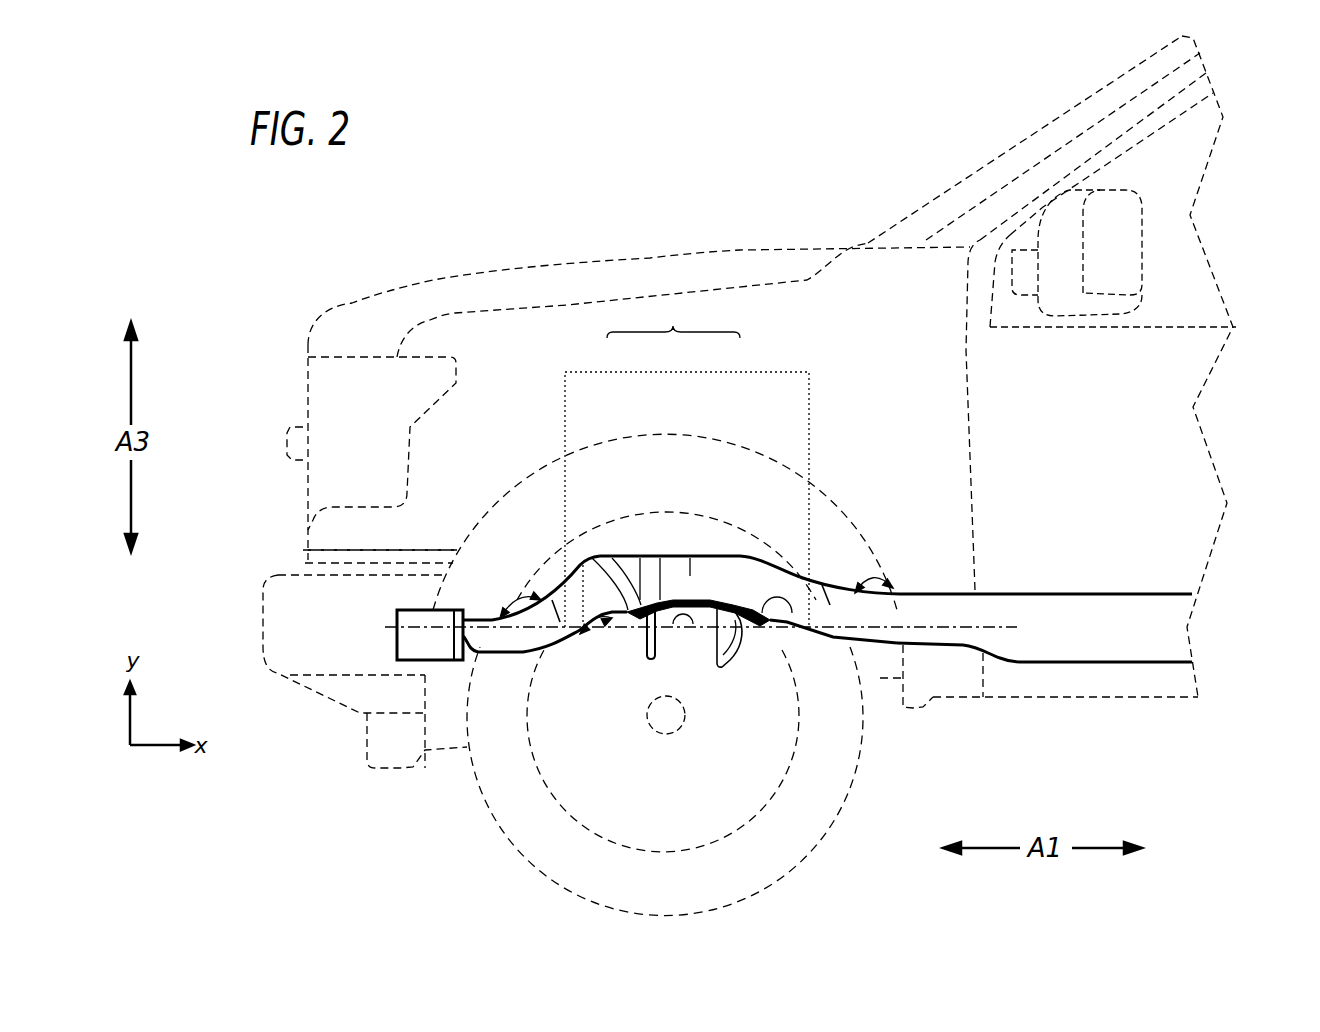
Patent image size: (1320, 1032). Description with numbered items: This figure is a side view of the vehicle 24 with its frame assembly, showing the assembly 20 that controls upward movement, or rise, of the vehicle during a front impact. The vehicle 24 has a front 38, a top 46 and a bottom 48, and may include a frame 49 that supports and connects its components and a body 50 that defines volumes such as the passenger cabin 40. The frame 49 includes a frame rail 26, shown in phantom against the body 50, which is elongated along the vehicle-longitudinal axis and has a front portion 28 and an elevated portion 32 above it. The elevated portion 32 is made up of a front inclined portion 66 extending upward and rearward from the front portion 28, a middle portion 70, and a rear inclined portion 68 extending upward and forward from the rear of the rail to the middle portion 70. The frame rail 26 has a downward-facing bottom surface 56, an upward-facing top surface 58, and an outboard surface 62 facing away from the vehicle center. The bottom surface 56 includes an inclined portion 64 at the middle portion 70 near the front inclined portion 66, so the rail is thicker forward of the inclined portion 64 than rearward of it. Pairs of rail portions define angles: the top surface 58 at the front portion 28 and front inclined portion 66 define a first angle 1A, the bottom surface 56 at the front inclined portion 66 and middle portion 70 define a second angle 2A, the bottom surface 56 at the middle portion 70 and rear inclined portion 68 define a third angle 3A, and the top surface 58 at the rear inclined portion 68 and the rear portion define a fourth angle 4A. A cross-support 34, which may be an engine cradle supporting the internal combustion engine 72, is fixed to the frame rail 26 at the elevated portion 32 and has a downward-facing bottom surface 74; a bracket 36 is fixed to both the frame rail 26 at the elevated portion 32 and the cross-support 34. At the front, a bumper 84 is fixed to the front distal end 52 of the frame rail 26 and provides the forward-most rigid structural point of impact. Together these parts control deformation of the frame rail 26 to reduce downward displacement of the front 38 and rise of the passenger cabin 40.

The assembly 20 is at (890, 742).
The vehicle 24 is at (957, 182).
The frame rail 26 is at (1057, 645).
The front portion 28 is at (495, 652).
The elevated portion 32 is at (673, 317).
The cross-support 34 is at (688, 628).
The bracket 36 is at (637, 557).
The front 38 is at (270, 562).
The passenger cabin 40 is at (1170, 302).
The top 46 is at (1175, 36).
The bottom 48 is at (1088, 698).
The frame 49 is at (530, 510).
The body 50 is at (1127, 473).
The front distal end 52 is at (476, 648).
The bottom surface 56 is at (547, 645).
The top surface 58 is at (652, 557).
The outboard surface 62 is at (867, 617).
The inclined portion 64 is at (592, 557).
The front inclined portion 66 is at (552, 600).
The rear inclined portion 68 is at (822, 585).
The middle portion 70 is at (693, 572).
The internal combustion engine 72 is at (562, 412).
The bottom surface 74 is at (665, 636).
The bumper 84 is at (397, 650).
The first angle 1A is at (518, 600).
The second angle 2A is at (593, 638).
The third angle 3A is at (716, 638).
The fourth angle 4A is at (878, 580).